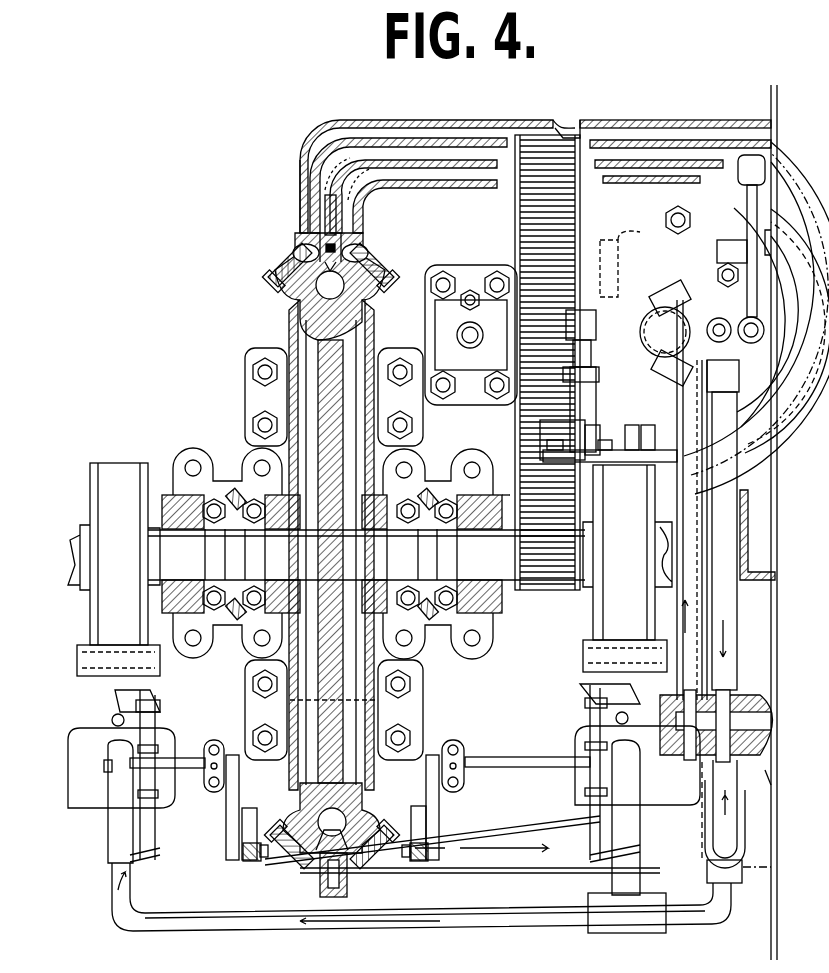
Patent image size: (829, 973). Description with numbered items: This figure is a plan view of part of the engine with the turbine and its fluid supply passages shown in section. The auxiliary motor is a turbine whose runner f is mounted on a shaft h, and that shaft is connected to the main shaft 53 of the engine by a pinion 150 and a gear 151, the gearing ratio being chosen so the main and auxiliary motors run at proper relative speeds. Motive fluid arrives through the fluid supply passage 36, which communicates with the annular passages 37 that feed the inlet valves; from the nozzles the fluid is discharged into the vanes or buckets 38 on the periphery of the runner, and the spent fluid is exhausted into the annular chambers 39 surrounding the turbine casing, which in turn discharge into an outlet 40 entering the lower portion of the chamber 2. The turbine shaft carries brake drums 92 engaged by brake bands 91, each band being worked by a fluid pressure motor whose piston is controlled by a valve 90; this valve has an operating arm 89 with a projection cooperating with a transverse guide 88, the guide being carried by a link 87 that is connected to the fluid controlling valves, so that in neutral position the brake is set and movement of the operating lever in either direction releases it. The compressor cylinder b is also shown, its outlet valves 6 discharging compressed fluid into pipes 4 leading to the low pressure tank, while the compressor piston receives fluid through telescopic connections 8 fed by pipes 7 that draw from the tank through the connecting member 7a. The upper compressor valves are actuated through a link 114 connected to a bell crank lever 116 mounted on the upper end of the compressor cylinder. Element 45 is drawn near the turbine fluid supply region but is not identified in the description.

The fluid supply passage 36 is at (428, 157).
The pipe wall 45 is at (305, 198).
The annular passages 37 is at (360, 244).
The vanes or buckets 38 is at (292, 292).
The annular chambers 39 is at (300, 256).
The main shaft 53 is at (432, 330).
The pinion 150 is at (560, 572).
The gear 151 is at (530, 428).
The shaft h is at (163, 660).
The brake bands 91 is at (612, 593).
The brake drums 92 is at (148, 468).
The telescopic connections 8 is at (590, 372).
The bell crank lever 116 is at (714, 318).
The link 114 is at (752, 158).
The outlet valves 6 is at (749, 370).
The cylinder b is at (767, 384).
The pipes 7 is at (683, 522).
The pipes 4 is at (726, 548).
The connecting member 7a is at (752, 722).
The chamber 2 is at (736, 814).
The outlet 40 is at (520, 850).
The operating arm 89 is at (234, 852).
The transverse guide 88 is at (246, 832).
The link 87 is at (250, 858).
The valve 90 is at (190, 760).
The runner f is at (360, 700).